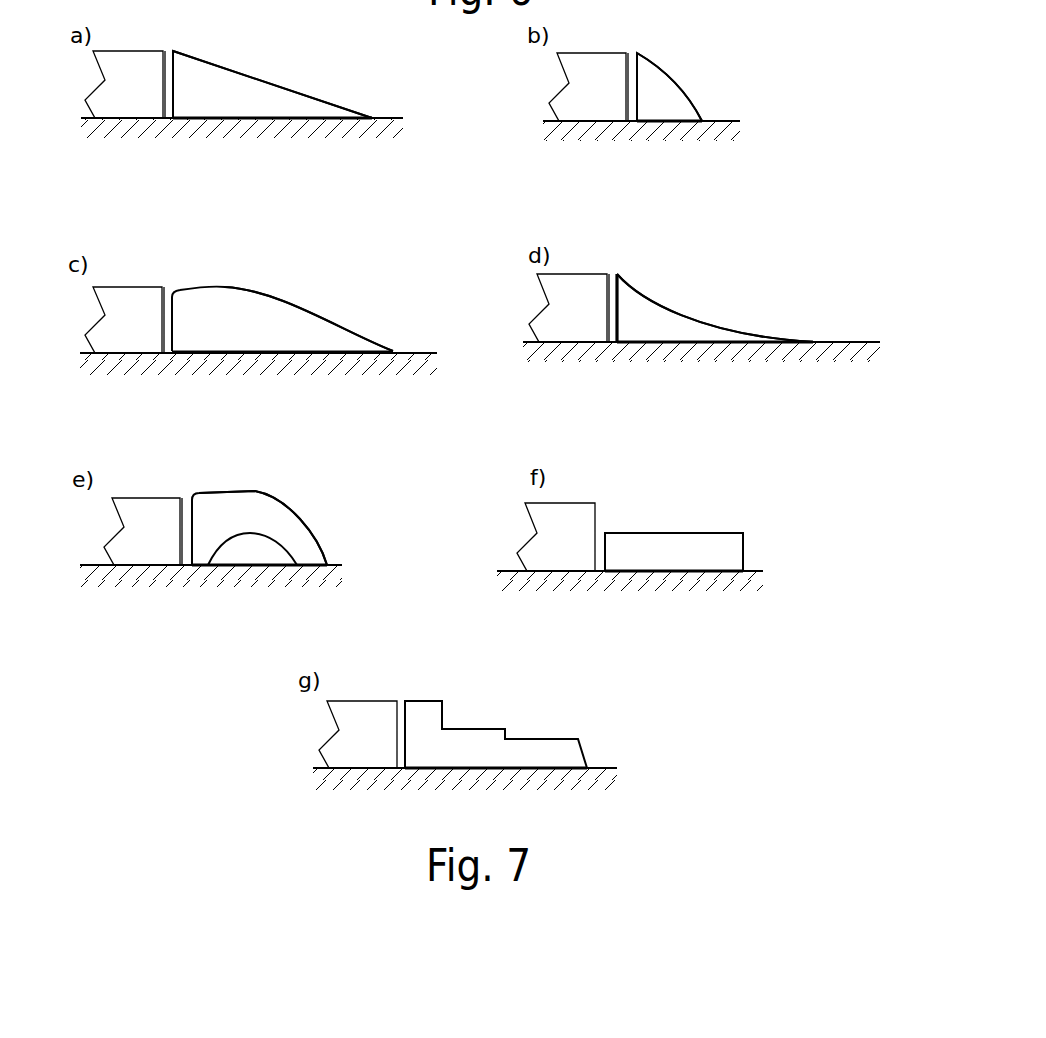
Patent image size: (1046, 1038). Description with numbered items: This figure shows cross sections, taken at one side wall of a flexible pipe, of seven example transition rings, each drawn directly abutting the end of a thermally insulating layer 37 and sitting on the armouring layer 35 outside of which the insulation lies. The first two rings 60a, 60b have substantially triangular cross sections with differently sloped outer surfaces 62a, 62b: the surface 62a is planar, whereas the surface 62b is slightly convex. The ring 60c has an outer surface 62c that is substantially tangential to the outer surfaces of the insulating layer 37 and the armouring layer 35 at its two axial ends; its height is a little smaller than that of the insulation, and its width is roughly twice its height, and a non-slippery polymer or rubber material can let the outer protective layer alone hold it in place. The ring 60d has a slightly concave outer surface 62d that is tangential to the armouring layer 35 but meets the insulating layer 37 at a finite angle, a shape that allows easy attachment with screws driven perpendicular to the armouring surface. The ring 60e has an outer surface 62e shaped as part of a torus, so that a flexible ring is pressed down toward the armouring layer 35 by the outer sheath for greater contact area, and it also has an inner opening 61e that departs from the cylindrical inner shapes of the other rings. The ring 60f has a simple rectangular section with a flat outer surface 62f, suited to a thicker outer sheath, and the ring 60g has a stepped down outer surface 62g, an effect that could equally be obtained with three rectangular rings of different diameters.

The armouring layer 35 is at (250, 167).
The thermally insulating layer 37 is at (150, 104).
The transition ring 60a is at (234, 104).
The outer surface 62a is at (278, 83).
The transition ring 60b is at (650, 83).
The outer surface 62b is at (692, 100).
The ring 60c is at (246, 337).
The outer surface 62c is at (297, 307).
The transition ring 60d is at (638, 310).
The outer surface 62d is at (740, 325).
The transition ring 60e is at (256, 531).
The outer surface 62e is at (220, 492).
The inner opening 61e is at (280, 542).
The transition ring 60f is at (690, 564).
The outer surface 62f is at (672, 533).
The transition ring 60g is at (470, 766).
The outer surface 62g is at (490, 728).